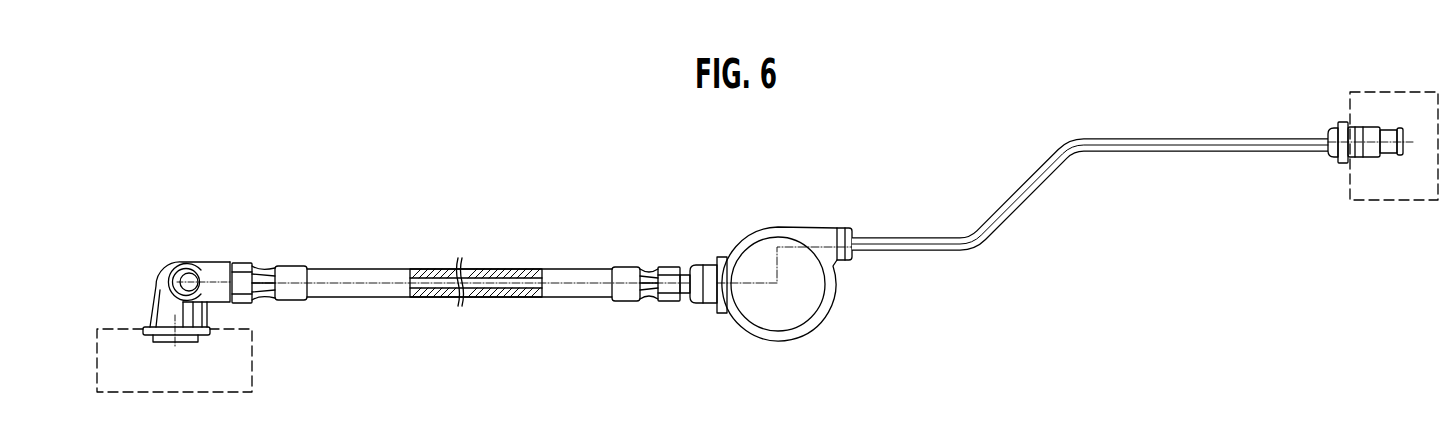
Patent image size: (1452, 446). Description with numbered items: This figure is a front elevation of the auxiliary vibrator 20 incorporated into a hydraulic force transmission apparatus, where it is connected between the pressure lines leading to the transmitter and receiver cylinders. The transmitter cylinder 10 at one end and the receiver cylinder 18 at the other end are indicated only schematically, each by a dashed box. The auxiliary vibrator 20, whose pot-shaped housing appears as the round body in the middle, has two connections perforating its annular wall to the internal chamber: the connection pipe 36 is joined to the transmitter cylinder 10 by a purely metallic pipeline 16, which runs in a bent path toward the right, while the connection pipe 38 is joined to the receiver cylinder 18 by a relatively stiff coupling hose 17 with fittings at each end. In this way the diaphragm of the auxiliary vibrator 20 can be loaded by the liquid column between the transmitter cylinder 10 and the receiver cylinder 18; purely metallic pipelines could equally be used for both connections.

The transmitter cylinder 10 is at (1358, 110).
The metallic pipeline 16 is at (1033, 157).
The coupling hose 17 is at (520, 256).
The receiver cylinder 18 is at (238, 347).
The auxiliary vibrator 20 is at (792, 216).
The connection pipe 36 is at (828, 237).
The connection pipe 38 is at (708, 292).